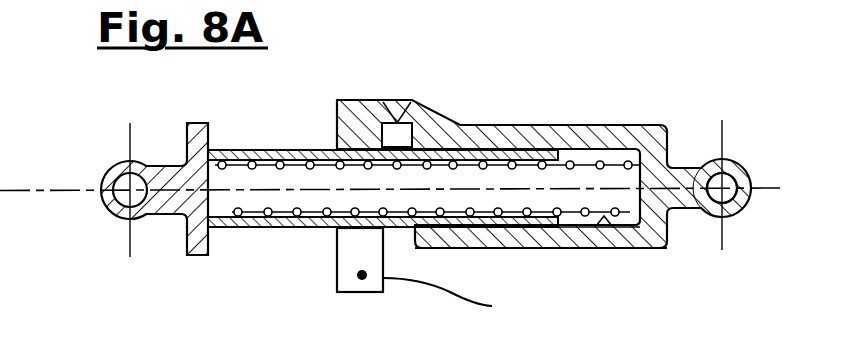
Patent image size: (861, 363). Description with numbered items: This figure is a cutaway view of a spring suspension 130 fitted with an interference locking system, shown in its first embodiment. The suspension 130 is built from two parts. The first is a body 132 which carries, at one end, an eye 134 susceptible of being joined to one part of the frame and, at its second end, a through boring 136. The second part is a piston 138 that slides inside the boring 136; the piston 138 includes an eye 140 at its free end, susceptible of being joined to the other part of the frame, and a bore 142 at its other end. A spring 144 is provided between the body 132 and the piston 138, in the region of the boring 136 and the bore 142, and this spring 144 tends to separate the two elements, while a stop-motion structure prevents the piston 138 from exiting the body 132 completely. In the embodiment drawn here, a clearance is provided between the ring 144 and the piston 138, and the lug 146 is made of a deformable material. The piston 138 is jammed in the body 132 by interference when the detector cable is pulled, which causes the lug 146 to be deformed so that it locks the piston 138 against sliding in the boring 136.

The spring suspension 130 is at (594, 92).
The body 132 is at (583, 249).
The eye 134 is at (738, 172).
The through boring 136 is at (597, 224).
The piston 138 is at (312, 233).
The eye 140 is at (103, 212).
The bore 142 is at (258, 216).
The spring 144 is at (337, 107).
The lug 146 is at (398, 102).